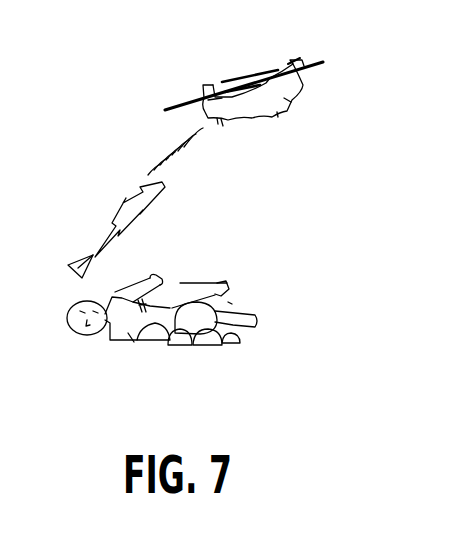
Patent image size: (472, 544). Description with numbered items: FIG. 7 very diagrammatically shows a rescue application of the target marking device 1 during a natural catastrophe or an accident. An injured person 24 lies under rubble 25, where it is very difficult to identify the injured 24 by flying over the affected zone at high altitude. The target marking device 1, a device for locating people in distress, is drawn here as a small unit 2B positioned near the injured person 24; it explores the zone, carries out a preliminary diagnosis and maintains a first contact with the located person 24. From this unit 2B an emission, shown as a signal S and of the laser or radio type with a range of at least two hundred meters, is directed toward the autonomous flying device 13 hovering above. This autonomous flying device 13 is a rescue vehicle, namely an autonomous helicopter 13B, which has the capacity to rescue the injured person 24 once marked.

The target marking device 1 is at (73, 251).
The portable transmitting device 2B is at (67, 273).
The signal S is at (118, 210).
The autonomous flying device 13 is at (257, 121).
The autonomous helicopter 13B is at (287, 102).
The injured person 24 is at (122, 328).
The rubble 25 is at (228, 302).